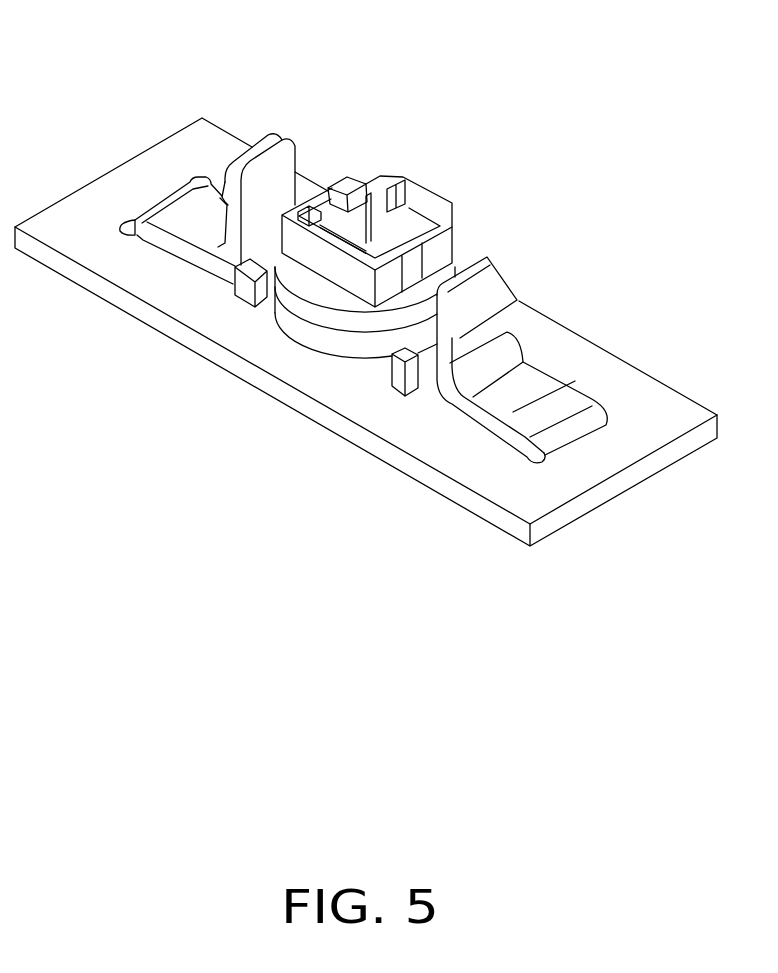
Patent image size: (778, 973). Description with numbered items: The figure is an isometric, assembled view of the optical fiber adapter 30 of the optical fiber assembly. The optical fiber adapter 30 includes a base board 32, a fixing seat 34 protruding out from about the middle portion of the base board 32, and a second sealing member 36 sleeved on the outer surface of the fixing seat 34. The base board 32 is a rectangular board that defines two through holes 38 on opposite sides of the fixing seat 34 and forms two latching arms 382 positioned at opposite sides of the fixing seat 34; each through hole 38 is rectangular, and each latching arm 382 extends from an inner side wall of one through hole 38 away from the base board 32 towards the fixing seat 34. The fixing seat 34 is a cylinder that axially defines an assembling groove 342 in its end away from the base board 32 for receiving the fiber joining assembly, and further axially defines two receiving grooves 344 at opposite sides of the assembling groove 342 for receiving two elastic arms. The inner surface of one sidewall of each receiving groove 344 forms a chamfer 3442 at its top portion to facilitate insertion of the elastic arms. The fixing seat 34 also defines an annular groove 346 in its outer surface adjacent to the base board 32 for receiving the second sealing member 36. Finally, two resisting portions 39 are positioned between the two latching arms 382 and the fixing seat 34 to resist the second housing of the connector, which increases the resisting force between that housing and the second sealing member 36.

The optical fiber adapter 30 is at (138, 50).
The base board 32 is at (575, 365).
The fixing seat 34 is at (472, 182).
The assembling groove 342 is at (390, 205).
The receiving grooves 344 is at (310, 207).
The chamfer 3442 is at (340, 207).
The annular groove 346 is at (337, 357).
The second sealing member 36 is at (290, 314).
The through holes 38 is at (473, 423).
The latching arms 382 is at (487, 300).
The resisting portions 39 is at (405, 373).